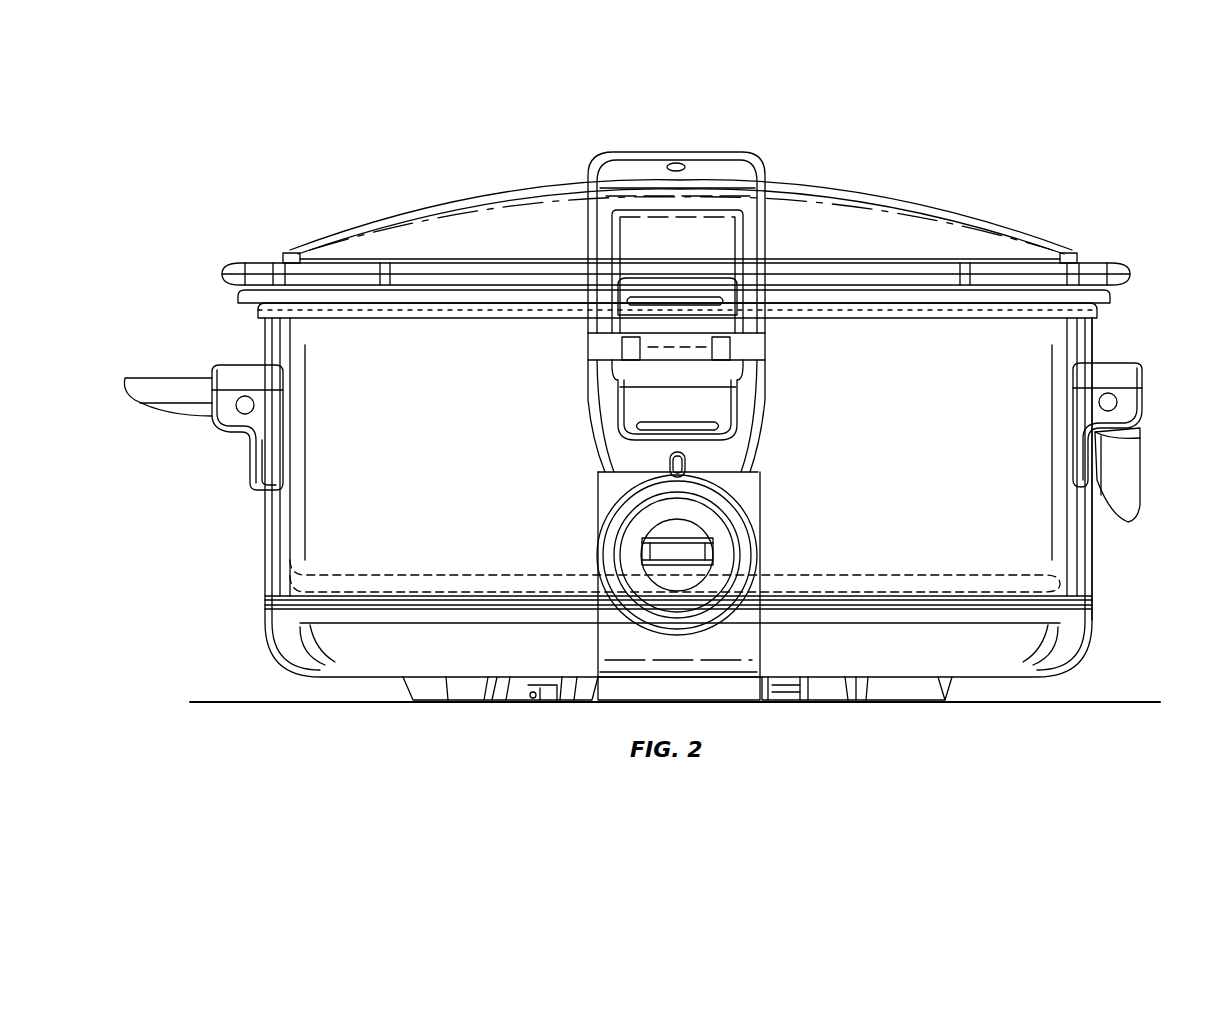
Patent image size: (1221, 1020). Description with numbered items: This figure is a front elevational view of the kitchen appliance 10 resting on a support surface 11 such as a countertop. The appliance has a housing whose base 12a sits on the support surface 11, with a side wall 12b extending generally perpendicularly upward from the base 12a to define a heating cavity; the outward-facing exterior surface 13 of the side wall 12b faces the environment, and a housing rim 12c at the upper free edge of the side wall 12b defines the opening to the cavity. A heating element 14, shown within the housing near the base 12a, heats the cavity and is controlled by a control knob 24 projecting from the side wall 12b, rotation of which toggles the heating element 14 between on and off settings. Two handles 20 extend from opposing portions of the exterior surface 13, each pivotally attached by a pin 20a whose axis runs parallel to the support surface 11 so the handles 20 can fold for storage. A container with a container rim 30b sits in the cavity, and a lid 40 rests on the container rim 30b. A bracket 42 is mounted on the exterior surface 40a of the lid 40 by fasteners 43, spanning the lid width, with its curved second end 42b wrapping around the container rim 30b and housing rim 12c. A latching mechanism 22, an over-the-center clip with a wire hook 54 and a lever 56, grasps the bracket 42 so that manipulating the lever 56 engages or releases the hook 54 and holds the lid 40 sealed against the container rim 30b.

The kitchen appliance 10 is at (850, 116).
The support surface 11 is at (1090, 702).
The base 12a is at (300, 650).
The side wall 12b is at (1078, 346).
The housing rim 12c is at (258, 308).
The exterior surface 13 is at (270, 500).
The heating element 14 is at (290, 553).
The handle 20 is at (152, 420).
The pin 20a is at (240, 414).
The latching mechanism 22 is at (580, 409).
The control knob 24 is at (690, 540).
The container rim 30b is at (940, 300).
The lid 40 is at (548, 212).
The exterior surface 40a is at (972, 194).
The bracket 42 is at (645, 152).
The second end 42b is at (770, 245).
The fastener 43 is at (678, 165).
The hook 54 is at (760, 330).
The lever 56 is at (718, 405).